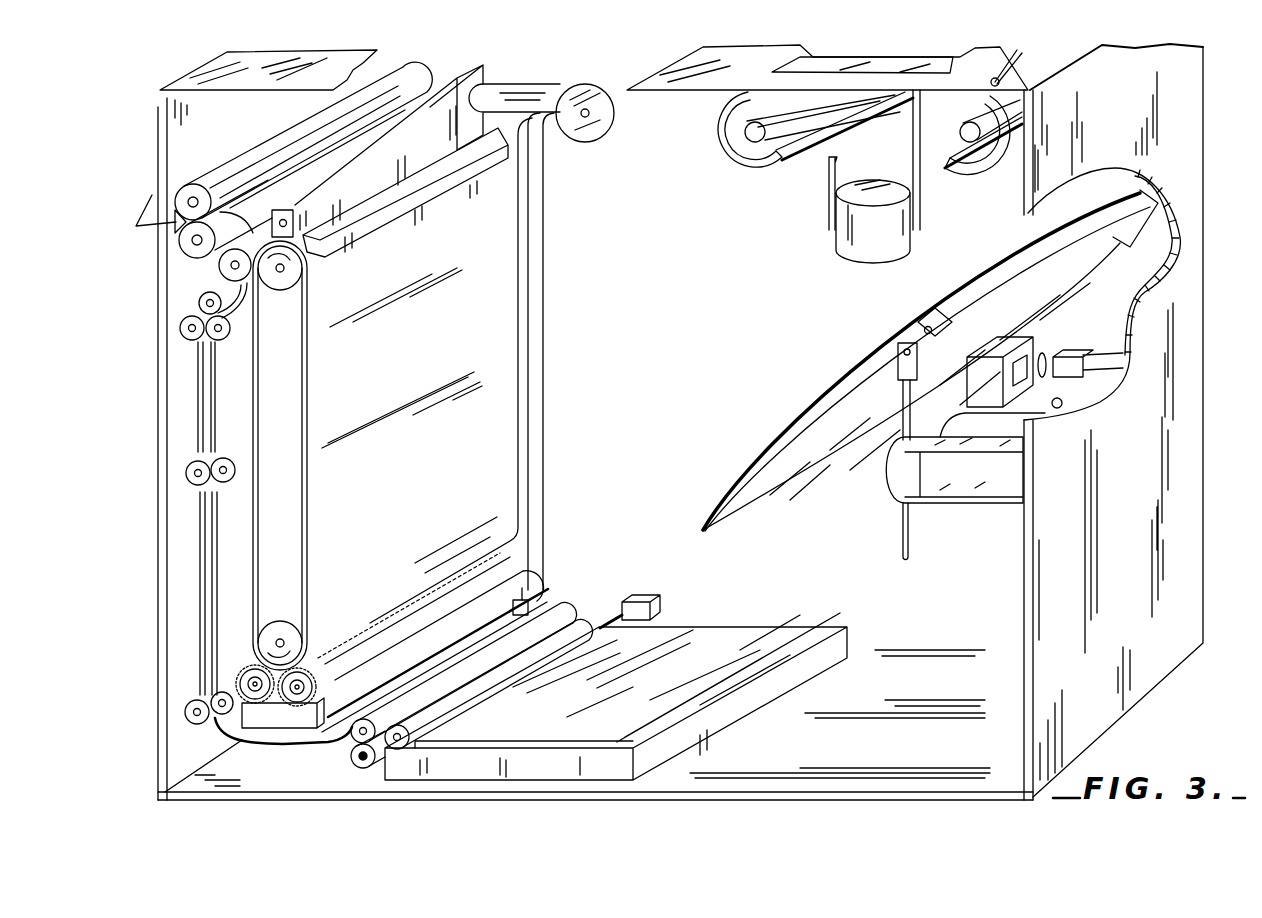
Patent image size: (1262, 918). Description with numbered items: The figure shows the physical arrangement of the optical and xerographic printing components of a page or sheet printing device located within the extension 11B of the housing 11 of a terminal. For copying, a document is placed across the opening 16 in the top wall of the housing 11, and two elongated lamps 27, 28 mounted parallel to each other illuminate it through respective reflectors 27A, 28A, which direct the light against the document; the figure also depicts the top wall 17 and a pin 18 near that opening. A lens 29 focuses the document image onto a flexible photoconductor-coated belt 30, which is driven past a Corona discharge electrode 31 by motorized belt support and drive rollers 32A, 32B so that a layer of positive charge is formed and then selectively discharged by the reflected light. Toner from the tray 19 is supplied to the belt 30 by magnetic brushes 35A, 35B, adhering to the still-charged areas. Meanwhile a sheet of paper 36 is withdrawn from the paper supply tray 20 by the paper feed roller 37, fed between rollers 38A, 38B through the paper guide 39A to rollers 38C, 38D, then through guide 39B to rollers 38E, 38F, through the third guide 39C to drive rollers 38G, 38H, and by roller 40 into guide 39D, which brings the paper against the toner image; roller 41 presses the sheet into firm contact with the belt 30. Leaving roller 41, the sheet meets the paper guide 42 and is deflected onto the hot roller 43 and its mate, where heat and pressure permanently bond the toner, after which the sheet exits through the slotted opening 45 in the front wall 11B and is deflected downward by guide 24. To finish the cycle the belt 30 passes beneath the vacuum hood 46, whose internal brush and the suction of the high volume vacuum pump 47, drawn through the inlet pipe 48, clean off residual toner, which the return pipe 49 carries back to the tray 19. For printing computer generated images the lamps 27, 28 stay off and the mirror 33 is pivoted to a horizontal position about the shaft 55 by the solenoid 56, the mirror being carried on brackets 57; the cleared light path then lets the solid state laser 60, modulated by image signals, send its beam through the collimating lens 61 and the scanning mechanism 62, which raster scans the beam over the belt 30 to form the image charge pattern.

The housing 11 is at (1133, 687).
The extension 11B is at (158, 138).
The opening 16 is at (790, 60).
The rear panel 17 is at (1053, 62).
The pivot pin 18 is at (990, 78).
The toner tray 19 is at (290, 712).
The paper supply tray 20 is at (722, 715).
The guide 24 is at (152, 195).
The lamp 27 is at (745, 125).
The reflector 27A is at (740, 165).
The lamp 28 is at (978, 122).
The reflector 28A is at (965, 175).
The lens 29 is at (830, 200).
The flexible belt 30 is at (397, 383).
The Corona discharge electrode 31 is at (420, 200).
The belt support and drive roller 32A is at (280, 292).
The belt support and drive roller 32B is at (268, 620).
The mirror 33 is at (765, 460).
The magnetic brush 35A is at (240, 680).
The magnetic brush 35B is at (336, 650).
The sheet of paper 36 is at (742, 640).
The paper feed roller 37 is at (608, 618).
The roller 38A is at (570, 608).
The roller 38B is at (358, 763).
The roller 38C is at (185, 708).
The roller 38D is at (215, 722).
The roller 38E is at (238, 467).
The roller 38F is at (185, 473).
The drive roller 38G is at (183, 336).
The drive roller 38H is at (208, 340).
The paper guide 39A is at (213, 728).
The guide 39B is at (202, 556).
The guide 39C is at (198, 400).
The guide 39D is at (240, 285).
The roller 40 is at (200, 306).
The roller 41 is at (218, 267).
The paper guide 42 is at (275, 195).
The hot roller 43 is at (240, 180).
The slotted opening 45 is at (185, 222).
The vacuum hood 46 is at (460, 100).
The vacuum pump 47 is at (600, 142).
The inlet pipe 48 is at (522, 90).
The return pipe 49 is at (548, 412).
The shaft 55 is at (922, 325).
The solenoid 56 is at (888, 478).
The brackets 57 is at (900, 330).
The solid state laser 60 is at (1072, 355).
The collimating lens 61 is at (1046, 350).
The scanning mechanism 62 is at (990, 348).